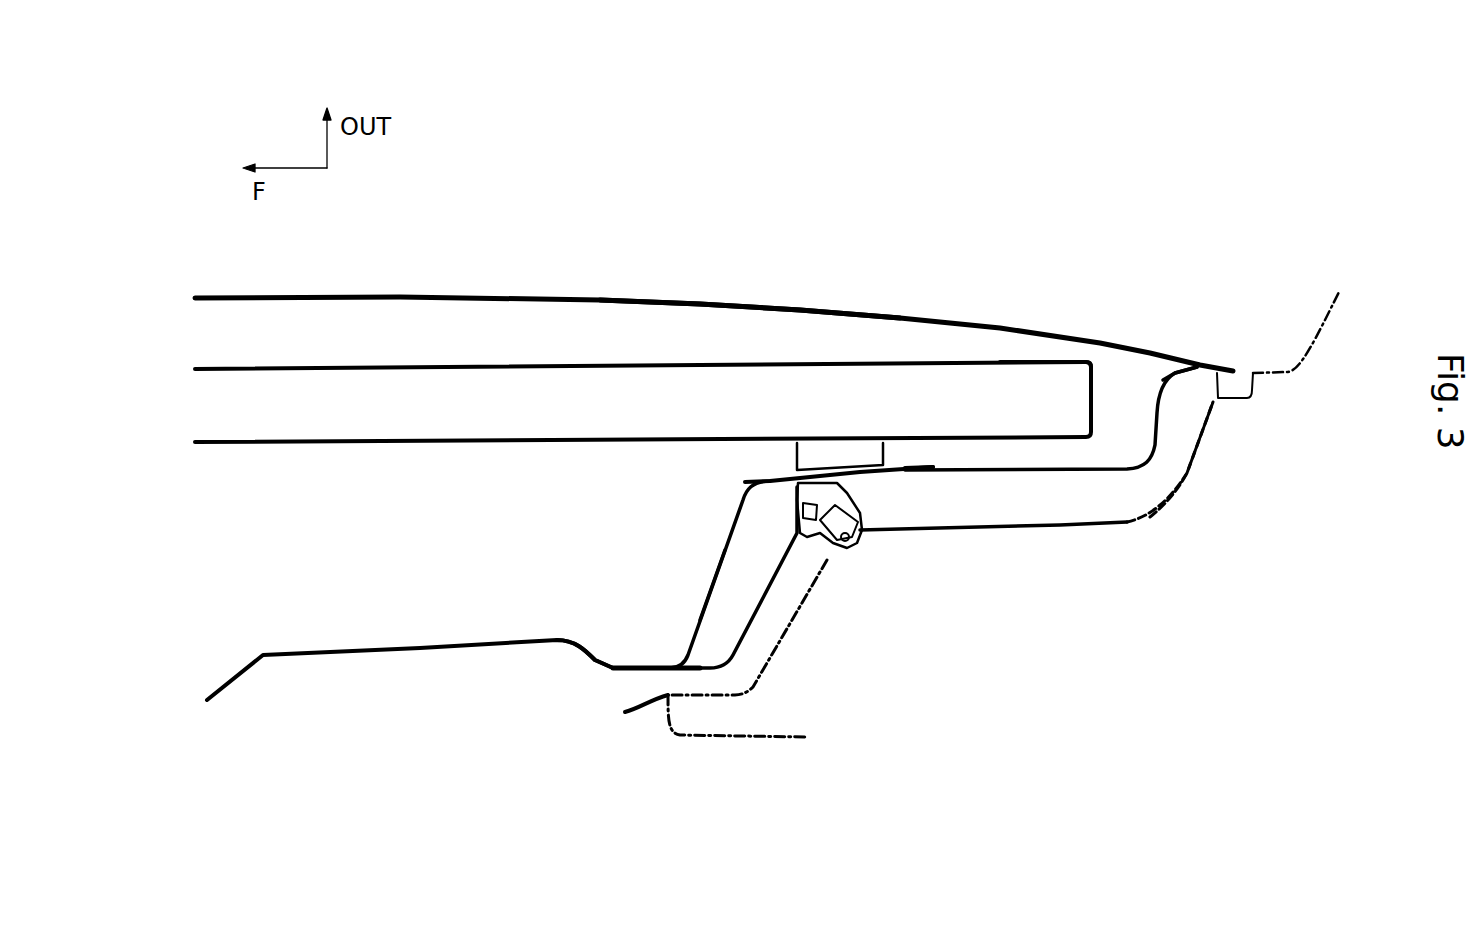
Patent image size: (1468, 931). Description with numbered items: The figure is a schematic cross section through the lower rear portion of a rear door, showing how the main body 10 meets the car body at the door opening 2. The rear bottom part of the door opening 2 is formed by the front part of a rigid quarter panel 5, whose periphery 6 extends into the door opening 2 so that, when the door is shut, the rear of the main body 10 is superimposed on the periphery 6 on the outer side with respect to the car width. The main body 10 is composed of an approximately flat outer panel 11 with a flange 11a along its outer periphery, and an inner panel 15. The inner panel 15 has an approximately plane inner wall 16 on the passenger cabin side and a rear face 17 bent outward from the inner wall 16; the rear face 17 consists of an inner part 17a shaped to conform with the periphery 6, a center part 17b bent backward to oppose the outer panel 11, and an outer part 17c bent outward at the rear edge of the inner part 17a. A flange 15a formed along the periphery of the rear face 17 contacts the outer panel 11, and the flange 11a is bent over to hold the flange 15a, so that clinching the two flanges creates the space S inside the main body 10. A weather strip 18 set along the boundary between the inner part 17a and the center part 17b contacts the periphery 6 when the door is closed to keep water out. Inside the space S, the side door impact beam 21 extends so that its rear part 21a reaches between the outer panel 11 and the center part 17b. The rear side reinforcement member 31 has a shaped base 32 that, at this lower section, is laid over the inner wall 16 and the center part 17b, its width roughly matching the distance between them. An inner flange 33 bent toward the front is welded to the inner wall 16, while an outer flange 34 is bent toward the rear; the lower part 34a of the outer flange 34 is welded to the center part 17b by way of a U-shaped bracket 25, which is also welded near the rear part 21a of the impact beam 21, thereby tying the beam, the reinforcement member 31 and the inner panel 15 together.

The door opening 2 is at (584, 720).
The quarter panel 5 is at (1305, 311).
The periphery 6 is at (785, 633).
The main body 10 is at (668, 260).
The outer panel 11 is at (533, 288).
The flange 11a is at (1218, 400).
The inner panel 15 is at (456, 658).
The flange 15a is at (1203, 365).
The inner wall 16 is at (540, 648).
The rear face 17 is at (975, 478).
The inner part 17a is at (755, 612).
The center part 17b is at (1020, 470).
The outer part 17c is at (1157, 418).
The weather strip 18 is at (860, 510).
The side door impact beam 21 is at (419, 358).
The rear part 21a is at (843, 360).
The bracket 25 is at (793, 455).
The rear side reinforcement member 31 is at (714, 552).
The base 32 is at (710, 589).
The inner flange 33 is at (632, 665).
The outer flange 34 is at (745, 480).
The lower part 34a is at (909, 455).
The space S is at (390, 560).